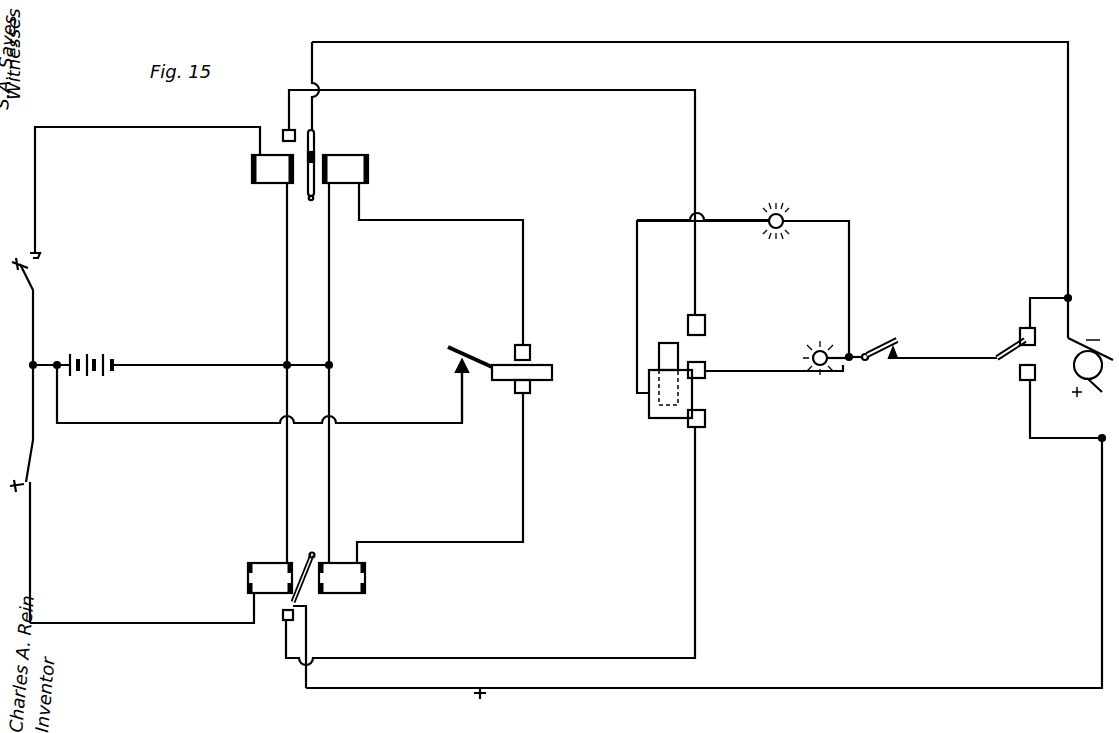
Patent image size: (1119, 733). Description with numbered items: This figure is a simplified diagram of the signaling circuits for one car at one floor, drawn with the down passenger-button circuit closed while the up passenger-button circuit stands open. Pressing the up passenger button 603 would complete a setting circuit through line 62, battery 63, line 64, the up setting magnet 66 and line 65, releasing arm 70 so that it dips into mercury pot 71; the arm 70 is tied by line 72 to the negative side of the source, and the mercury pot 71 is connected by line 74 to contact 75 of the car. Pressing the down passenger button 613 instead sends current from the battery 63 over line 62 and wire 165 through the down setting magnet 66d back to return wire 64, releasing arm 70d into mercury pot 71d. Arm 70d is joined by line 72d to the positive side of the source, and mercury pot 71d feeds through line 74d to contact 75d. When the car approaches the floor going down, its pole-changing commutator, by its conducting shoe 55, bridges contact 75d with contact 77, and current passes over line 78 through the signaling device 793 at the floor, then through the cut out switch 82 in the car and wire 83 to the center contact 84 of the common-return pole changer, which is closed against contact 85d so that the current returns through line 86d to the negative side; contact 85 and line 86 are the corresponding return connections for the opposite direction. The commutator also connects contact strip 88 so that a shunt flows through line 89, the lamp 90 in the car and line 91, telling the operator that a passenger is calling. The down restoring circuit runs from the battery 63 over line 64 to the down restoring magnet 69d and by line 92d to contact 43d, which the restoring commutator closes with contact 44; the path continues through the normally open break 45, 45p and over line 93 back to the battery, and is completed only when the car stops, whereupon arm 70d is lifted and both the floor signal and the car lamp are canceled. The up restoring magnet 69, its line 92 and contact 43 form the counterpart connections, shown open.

The contact 43 is at (530, 350).
The lower contact 43d is at (530, 388).
The contact 44 is at (552, 370).
The normally open break 45 is at (483, 342).
The normally open break (primed contact) 45p is at (464, 380).
The conducting shoe 55 is at (668, 395).
The up passenger button 603 is at (40, 268).
The down passenger button 613 is at (30, 455).
The line 62 is at (50, 364).
The battery 63 is at (106, 342).
The line 64 is at (228, 362).
The line 65 is at (160, 128).
The up setting magnet 66 is at (272, 183).
The down setting magnet 66d is at (268, 575).
The restoring magnet 69 is at (345, 170).
The down restoring magnet 69d is at (343, 580).
The arm 70 is at (314, 138).
The arm 70d is at (308, 618).
The mercury pot 71 is at (282, 132).
The mercury pot 71d is at (283, 618).
The line 72 is at (845, 44).
The line 72d is at (783, 688).
The line 74 is at (500, 90).
The line 74d is at (542, 660).
The contact 75 is at (705, 325).
The contact 75d is at (705, 420).
The contact 77 is at (705, 364).
The line 78 is at (730, 372).
The signaling device 793 is at (819, 344).
The cut out switch 82 is at (880, 345).
The wire 83 is at (900, 358).
The center contact 84 is at (1008, 360).
The contact 85 is at (1020, 380).
The contact 85d is at (1020, 335).
The conductor 86 is at (1050, 438).
The line 86d is at (1050, 298).
The contact strip 88 is at (652, 418).
The line 89 is at (637, 295).
The lamp 90 is at (743, 213).
The line 91 is at (849, 292).
The conductor 92 is at (523, 250).
The line 92d is at (523, 507).
The line 93 is at (172, 423).
The wire 165 is at (128, 624).